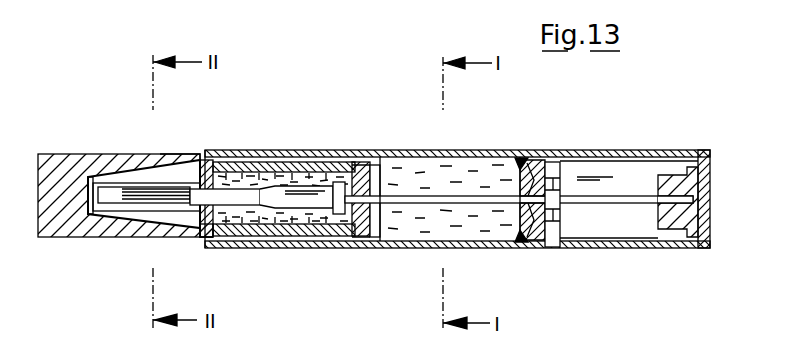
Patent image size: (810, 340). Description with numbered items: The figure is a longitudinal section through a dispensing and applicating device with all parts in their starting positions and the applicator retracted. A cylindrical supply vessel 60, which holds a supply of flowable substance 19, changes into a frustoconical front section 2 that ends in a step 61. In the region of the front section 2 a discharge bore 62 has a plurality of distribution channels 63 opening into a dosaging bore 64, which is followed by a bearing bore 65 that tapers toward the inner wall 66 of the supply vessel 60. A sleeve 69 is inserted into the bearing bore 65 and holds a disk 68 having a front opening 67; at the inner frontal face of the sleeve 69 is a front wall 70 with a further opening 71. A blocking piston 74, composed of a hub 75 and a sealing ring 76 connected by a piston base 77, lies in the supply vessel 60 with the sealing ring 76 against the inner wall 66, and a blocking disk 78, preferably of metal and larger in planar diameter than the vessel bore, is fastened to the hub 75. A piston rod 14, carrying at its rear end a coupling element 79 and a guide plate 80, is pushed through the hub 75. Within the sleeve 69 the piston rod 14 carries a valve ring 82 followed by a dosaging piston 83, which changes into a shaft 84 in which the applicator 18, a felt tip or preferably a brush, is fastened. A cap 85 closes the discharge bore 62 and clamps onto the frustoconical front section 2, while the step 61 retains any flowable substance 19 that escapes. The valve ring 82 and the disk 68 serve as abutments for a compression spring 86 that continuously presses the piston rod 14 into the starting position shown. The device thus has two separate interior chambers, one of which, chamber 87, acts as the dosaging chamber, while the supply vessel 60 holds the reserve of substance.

The frustoconical front section 2 is at (172, 172).
The piston rod 14 is at (597, 203).
The applicator 18 is at (122, 215).
The flowable substance 19 is at (496, 224).
The supply vessel 60 is at (325, 190).
The step 61 is at (97, 190).
The discharge bore 62 is at (88, 178).
The distribution channels 63 is at (150, 188).
The dosaging bore 64 is at (193, 157).
The bearing bore 65 is at (265, 173).
The inner wall 66 is at (405, 156).
The front opening 67 is at (202, 234).
The disk 68 is at (208, 226).
The sleeve 69 is at (290, 235).
The front wall 70 is at (372, 180).
The further opening 71 is at (393, 240).
The blocking piston 74 is at (534, 163).
The hub 75 is at (523, 226).
The sealing ring 76 is at (535, 240).
The piston base 77 is at (553, 162).
The blocking disk 78 is at (565, 162).
The coupling element 79 is at (700, 150).
The guide plate 80 is at (665, 237).
The valve ring 82 is at (356, 222).
The dosaging piston 83 is at (333, 216).
The shaft 84 is at (245, 226).
The cap 85 is at (75, 217).
The compression spring 86 is at (295, 182).
The dosaging chamber 87 is at (230, 163).